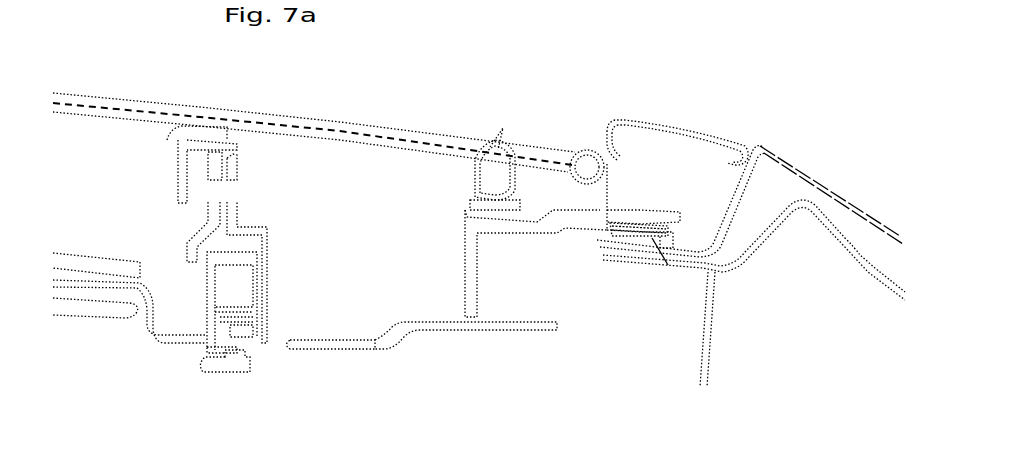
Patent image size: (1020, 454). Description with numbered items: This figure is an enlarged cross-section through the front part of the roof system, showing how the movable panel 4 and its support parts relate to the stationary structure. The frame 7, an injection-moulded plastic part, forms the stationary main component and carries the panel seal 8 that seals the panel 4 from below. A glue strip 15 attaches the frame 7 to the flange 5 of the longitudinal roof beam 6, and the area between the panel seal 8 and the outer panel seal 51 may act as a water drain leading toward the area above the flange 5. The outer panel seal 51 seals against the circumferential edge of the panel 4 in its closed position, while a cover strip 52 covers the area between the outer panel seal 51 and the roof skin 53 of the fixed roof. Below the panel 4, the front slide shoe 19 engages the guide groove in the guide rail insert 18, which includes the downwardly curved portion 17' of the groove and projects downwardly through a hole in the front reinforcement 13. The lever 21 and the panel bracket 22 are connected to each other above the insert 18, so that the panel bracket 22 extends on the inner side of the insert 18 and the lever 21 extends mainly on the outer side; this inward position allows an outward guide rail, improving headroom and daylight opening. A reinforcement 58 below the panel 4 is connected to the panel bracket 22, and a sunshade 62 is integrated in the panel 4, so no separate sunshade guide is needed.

The panel 4 is at (317, 127).
The flange 5 is at (617, 253).
The longitudinal roof beam 6 is at (713, 297).
The frame 7 is at (535, 222).
The panel seal 8 is at (477, 173).
The front reinforcement 13 is at (415, 327).
The glue strip 15 is at (670, 257).
The downwardly curved portion 17' is at (219, 388).
The insert 18 is at (208, 350).
The front slide shoe 19 is at (243, 343).
The lever 21 is at (263, 292).
The panel bracket 22 is at (190, 243).
The outer panel seal 51 is at (577, 150).
The cover strip 52 is at (683, 127).
The roof skin 53 is at (798, 158).
The reinforcement 58 is at (180, 147).
The sunshade 62 is at (227, 115).